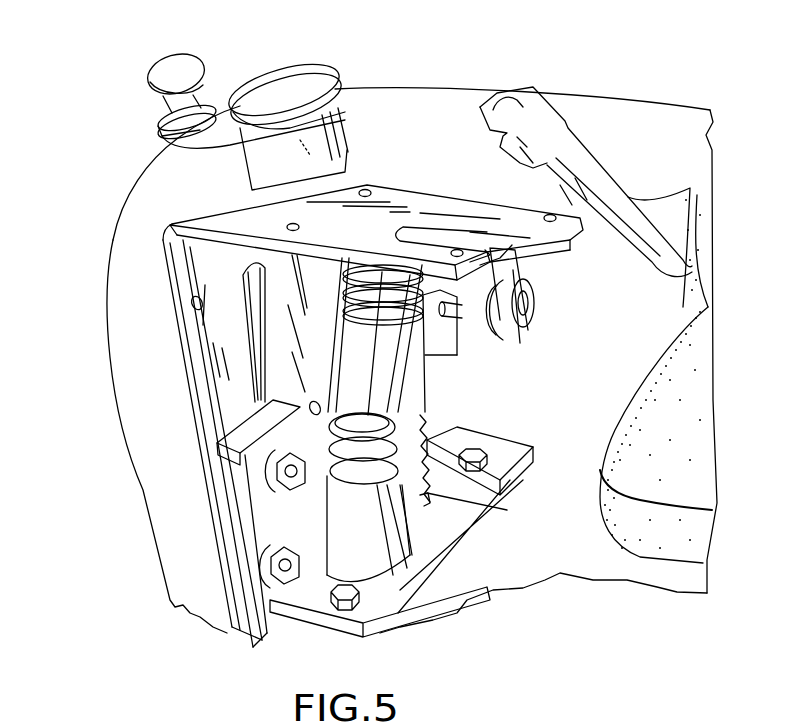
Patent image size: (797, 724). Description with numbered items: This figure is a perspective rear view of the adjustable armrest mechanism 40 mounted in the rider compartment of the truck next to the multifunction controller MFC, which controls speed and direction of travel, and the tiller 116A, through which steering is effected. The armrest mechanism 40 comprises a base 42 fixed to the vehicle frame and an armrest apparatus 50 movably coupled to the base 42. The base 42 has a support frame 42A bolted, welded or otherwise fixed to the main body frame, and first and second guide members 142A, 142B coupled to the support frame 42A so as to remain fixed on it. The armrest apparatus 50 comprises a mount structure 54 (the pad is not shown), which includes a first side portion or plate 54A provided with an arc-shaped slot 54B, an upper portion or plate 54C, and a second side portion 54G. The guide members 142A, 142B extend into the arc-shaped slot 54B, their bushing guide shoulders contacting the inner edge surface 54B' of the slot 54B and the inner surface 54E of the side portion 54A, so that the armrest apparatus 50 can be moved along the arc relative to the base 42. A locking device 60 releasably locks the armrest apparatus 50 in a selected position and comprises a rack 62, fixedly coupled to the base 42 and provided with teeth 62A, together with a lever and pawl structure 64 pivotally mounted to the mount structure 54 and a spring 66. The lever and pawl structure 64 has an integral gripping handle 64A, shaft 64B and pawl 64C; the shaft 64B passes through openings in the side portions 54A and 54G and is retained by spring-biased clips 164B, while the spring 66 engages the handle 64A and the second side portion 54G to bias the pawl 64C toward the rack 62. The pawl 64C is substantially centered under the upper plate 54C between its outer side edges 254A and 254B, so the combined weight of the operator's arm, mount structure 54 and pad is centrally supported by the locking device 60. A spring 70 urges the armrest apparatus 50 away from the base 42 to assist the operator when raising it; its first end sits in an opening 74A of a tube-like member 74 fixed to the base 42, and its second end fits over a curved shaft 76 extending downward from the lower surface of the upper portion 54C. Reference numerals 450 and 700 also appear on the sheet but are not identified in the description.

The adjustable armrest mechanism 40 is at (400, 172).
The armrest apparatus 50 is at (445, 138).
The locking device 60 is at (560, 308).
The tiller 116A is at (290, 62).
The multifunction controller MFC is at (585, 132).
The outer side edge 254A is at (570, 227).
The outer side edge 254B is at (237, 208).
The mount structure 54 is at (368, 174).
The upper portion or plate 54C is at (452, 206).
The base 42 is at (237, 593).
The support frame 42A is at (247, 633).
The inner edge surface 54B' is at (152, 331).
The first side portion or plate 54A is at (223, 290).
The inner surface 54E is at (245, 368).
The arc-shaped slot 54B is at (126, 375).
The first guide member 142A is at (250, 477).
The second guide member 142B is at (258, 560).
The curved shaft 76 is at (353, 390).
The tube-like member 74 is at (373, 552).
The opening 74A is at (420, 503).
The spring 70 is at (360, 465).
The pawl 64C is at (433, 383).
The teeth 62A is at (500, 508).
The rack 62 is at (410, 510).
The lever and pawl structure 64 is at (530, 272).
The gripping handle 64A is at (493, 280).
The second side portion 54G is at (527, 300).
The spring-biased clips 164B is at (517, 323).
The spring 66 is at (490, 337).
The shaft 64B is at (460, 313).
The assembly 450 is at (565, 718).
The assembly 700 is at (672, 721).